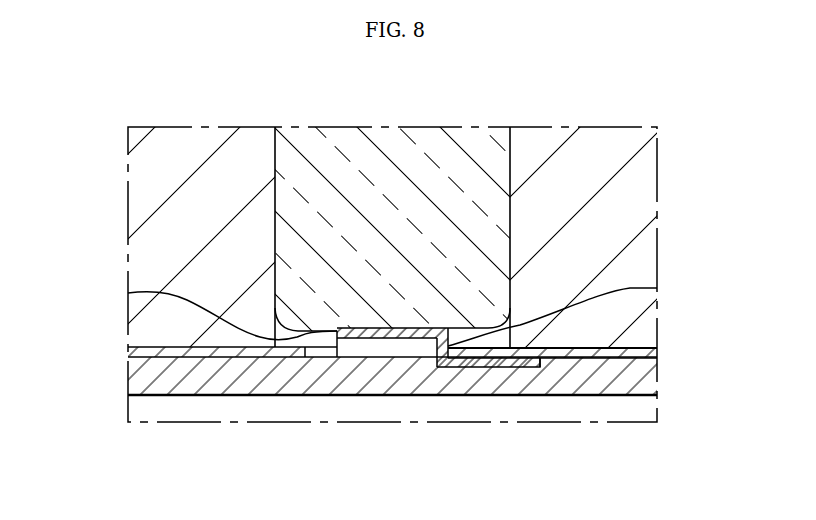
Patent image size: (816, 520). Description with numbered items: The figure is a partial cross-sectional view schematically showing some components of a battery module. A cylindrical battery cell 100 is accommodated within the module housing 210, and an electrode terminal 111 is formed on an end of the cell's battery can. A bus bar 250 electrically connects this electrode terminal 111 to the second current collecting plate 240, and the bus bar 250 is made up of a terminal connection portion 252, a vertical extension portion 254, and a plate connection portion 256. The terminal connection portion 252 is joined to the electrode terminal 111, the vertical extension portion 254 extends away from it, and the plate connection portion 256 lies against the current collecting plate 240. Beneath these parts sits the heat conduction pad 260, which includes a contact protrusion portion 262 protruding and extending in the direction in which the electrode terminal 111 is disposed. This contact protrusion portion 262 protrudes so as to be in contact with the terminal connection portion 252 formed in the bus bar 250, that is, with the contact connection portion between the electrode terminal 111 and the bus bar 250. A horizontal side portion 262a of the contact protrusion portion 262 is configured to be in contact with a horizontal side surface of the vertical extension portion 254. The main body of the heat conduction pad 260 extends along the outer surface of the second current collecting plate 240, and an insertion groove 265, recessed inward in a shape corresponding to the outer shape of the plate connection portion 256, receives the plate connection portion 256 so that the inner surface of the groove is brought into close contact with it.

The cylindrical battery cell 100 is at (385, 127).
The module housing 210 is at (152, 196).
The electrode terminal 111 is at (132, 294).
The second current collecting plate 240 is at (145, 352).
The bus bar 250 is at (438, 420).
The terminal connection portion 252 is at (392, 337).
The vertical extension portion 254 is at (437, 349).
The plate connection portion 256 is at (488, 413).
The heat conduction pad 260 is at (145, 379).
The contact protrusion portion 262 is at (371, 344).
The horizontal side portion 262a is at (657, 288).
The insertion groove 265 is at (537, 363).